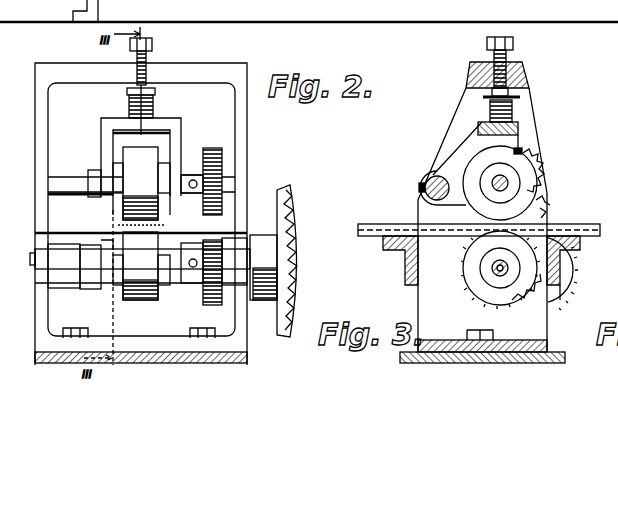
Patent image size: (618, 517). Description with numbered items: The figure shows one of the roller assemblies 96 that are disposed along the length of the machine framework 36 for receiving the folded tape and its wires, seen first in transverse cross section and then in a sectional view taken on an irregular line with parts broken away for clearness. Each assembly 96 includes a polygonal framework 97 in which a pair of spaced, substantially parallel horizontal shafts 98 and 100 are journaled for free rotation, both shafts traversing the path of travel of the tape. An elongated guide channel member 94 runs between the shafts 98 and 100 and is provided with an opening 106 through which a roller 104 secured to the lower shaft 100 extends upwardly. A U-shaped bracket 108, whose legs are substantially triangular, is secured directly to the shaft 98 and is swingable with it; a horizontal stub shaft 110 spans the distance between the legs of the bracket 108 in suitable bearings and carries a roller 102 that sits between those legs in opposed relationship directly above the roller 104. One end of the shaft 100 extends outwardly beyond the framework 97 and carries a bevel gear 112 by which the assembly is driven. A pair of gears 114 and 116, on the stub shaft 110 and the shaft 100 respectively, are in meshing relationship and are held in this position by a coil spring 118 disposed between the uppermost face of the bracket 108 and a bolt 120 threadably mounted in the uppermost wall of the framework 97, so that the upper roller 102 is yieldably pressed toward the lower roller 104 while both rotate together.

In FIG. 2, the framework 36 is at (247, 357).
In FIG. 3, the framework 36 is at (549, 351).
In FIG. 2, the channel member 94 is at (172, 229).
In FIG. 3, the channel member 94 is at (385, 226).
In FIG. 2, the roller assembly 96 is at (141, 205).
In FIG. 3, the roller assembly 96 is at (488, 207).
In FIG. 3, the polygonal framework 97 is at (523, 110).
In FIG. 2, the shaft 98 is at (70, 177).
In FIG. 3, the shaft 98 is at (428, 186).
In FIG. 2, the shaft 100 is at (100, 265).
In FIG. 3, the shaft 100 is at (492, 262).
In FIG. 2, the roller 102 is at (156, 152).
In FIG. 3, the roller 102 is at (513, 160).
In FIG. 2, the roller 104 is at (143, 296).
In FIG. 3, the roller 104 is at (478, 285).
In FIG. 2, the opening 106 is at (110, 234).
In FIG. 3, the opening 106 is at (549, 219).
In FIG. 2, the U-shaped bracket 108 is at (162, 119).
In FIG. 3, the U-shaped bracket 108 is at (483, 123).
In FIG. 3, the stub shaft 110 is at (526, 170).
In FIG. 2, the bevel gear 112 is at (293, 202).
In FIG. 3, the bevel gear 112 is at (567, 278).
In FIG. 2, the gear 114 is at (222, 156).
In FIG. 3, the gear 114 is at (547, 192).
In FIG. 2, the gear 116 is at (222, 300).
In FIG. 3, the gear 116 is at (528, 291).
In FIG. 2, the coil spring 118 is at (127, 98).
In FIG. 3, the coil spring 118 is at (490, 100).
In FIG. 2, the bolt 120 is at (138, 54).
In FIG. 3, the bolt 120 is at (508, 52).